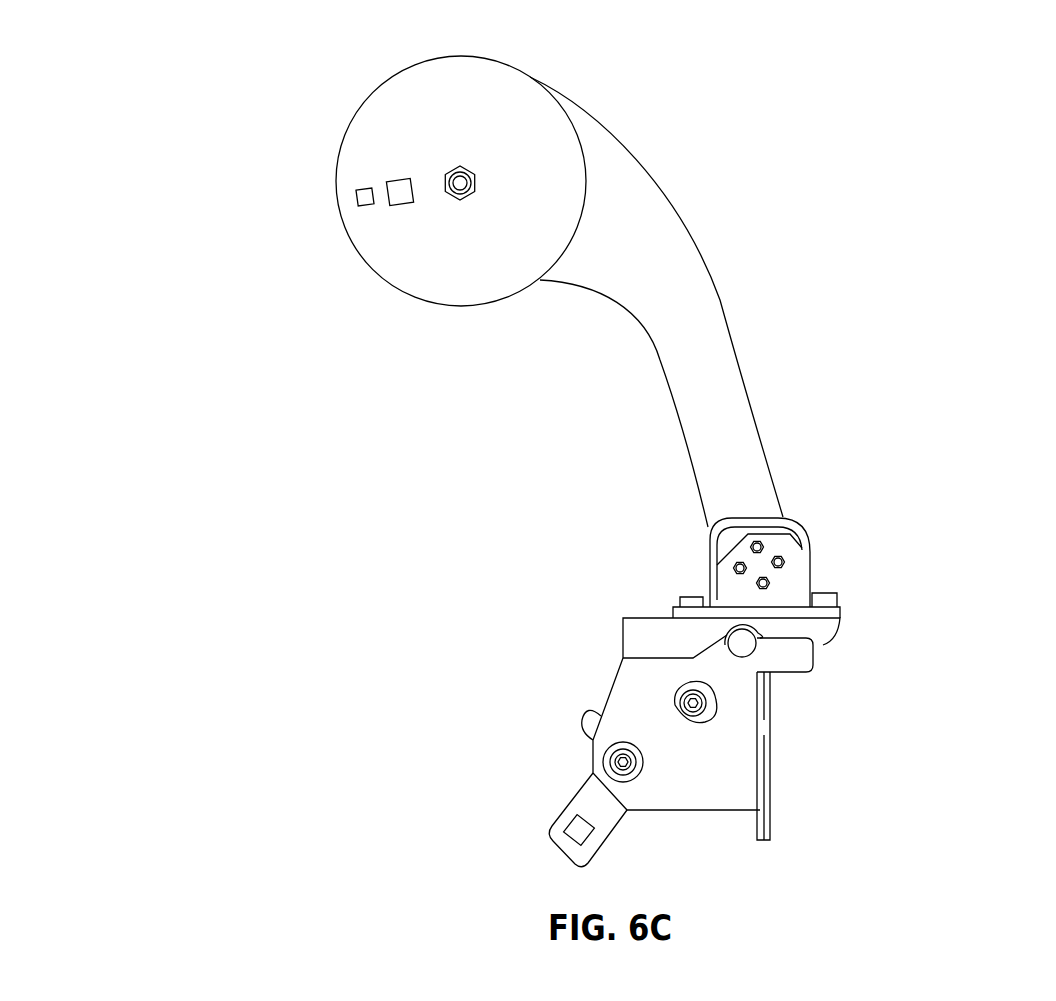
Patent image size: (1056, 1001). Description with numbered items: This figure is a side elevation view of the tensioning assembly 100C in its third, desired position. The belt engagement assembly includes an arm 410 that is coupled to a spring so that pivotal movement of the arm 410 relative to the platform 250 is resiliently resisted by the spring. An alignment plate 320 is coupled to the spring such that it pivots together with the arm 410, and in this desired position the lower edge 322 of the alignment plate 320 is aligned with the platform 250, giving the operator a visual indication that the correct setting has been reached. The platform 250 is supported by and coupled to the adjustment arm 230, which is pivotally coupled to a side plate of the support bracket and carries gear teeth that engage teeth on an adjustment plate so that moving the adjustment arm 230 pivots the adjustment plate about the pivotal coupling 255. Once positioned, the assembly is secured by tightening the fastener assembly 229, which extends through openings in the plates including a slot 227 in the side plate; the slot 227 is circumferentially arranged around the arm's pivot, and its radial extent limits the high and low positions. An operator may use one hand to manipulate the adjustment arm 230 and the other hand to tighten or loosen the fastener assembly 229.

The tensioning assembly 100C is at (78, 128).
The arm 410 is at (710, 350).
The alignment plate 320 is at (810, 572).
The lower edge 322 is at (783, 607).
The platform 250 is at (830, 640).
The pivotal coupling 255 is at (728, 634).
The slot 227 is at (675, 690).
The fastener assembly 229 is at (695, 727).
The adjustment arm 230 is at (547, 835).